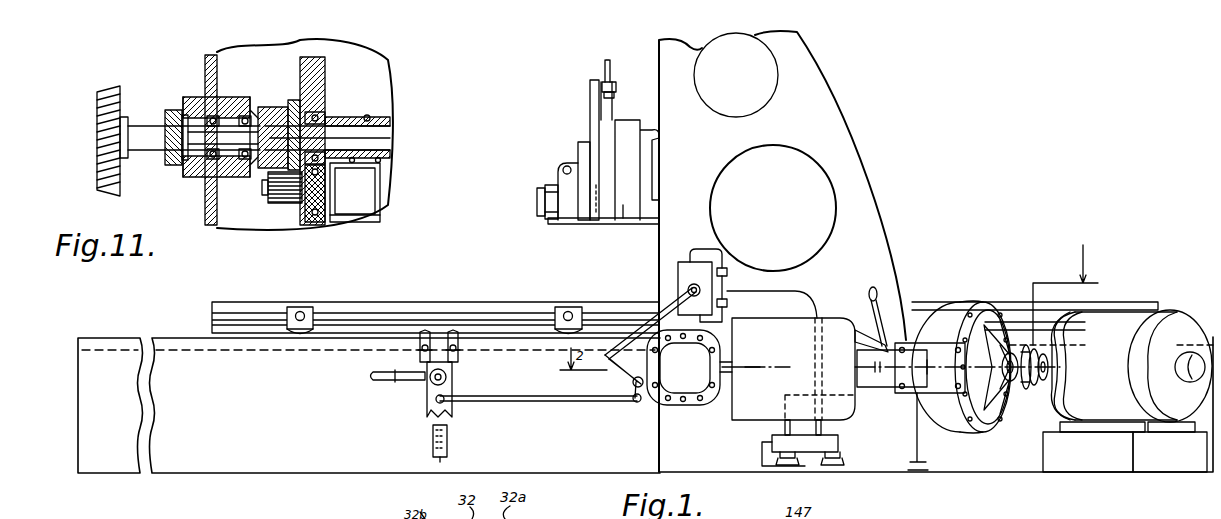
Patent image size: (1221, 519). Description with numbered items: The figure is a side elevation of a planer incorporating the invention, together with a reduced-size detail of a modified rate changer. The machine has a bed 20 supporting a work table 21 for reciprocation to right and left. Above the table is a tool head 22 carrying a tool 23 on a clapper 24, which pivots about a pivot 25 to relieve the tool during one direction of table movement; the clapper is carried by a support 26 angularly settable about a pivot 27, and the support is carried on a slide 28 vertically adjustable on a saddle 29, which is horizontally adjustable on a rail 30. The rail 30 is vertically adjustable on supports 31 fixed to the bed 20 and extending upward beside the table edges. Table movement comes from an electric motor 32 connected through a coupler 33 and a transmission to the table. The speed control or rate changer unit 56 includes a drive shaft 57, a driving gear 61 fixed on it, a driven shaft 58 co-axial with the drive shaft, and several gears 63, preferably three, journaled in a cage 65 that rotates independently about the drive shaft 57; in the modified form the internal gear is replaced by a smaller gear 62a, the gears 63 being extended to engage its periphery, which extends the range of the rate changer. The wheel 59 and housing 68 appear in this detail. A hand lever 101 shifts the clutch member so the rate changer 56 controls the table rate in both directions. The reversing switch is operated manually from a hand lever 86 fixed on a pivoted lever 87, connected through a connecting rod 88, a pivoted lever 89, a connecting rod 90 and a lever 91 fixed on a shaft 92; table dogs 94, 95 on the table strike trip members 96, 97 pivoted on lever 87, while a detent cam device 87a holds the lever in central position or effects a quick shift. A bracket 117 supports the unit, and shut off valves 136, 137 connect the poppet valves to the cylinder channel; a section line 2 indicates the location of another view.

In FIG. 1, the bed 20 is at (283, 462).
In FIG. 1, the work table 21 is at (262, 302).
In FIG. 1, the tool head 22 is at (568, 160).
In FIG. 1, the tool 23 is at (548, 222).
In FIG. 1, the clapper 24 is at (570, 225).
In FIG. 1, the pivot 25 is at (560, 170).
In FIG. 1, the support 26 is at (582, 152).
In FIG. 1, the pivot 27 is at (596, 225).
In FIG. 1, the slide 28 is at (589, 112).
In FIG. 1, the saddle 29 is at (620, 128).
In FIG. 1, the rail 30 is at (647, 222).
In FIG. 1, the support 31 is at (862, 175).
In FIG. 1, the electric motor 32 is at (1170, 324).
In FIG. 1, the coupler 33 is at (1034, 385).
In FIG. 1, the rate changer unit 56 is at (896, 369).
In FIG. 11, the drive shaft 57 is at (385, 139).
In FIG. 11, the driven shaft 58 is at (200, 160).
In FIG. 11, the grinding wheel 59 is at (106, 98).
In FIG. 11, the driving gear 61 is at (294, 100).
In FIG. 11, the gear 62a is at (278, 105).
In FIG. 11, the gear 63 is at (286, 204).
In FIG. 11, the cage 65 is at (325, 96).
In FIG. 11, the housing 68 is at (366, 198).
In FIG. 1, the hand lever 86 is at (378, 381).
In FIG. 1, the pivoted lever 87 is at (430, 392).
In FIG. 1, the detent cam device 87a is at (433, 437).
In FIG. 1, the connecting rod 88 is at (570, 402).
In FIG. 1, the pivoted lever 89 is at (632, 380).
In FIG. 1, the connecting rod 90 is at (668, 302).
In FIG. 1, the lever 91 is at (690, 268).
In FIG. 1, the shaft 92 is at (693, 297).
In FIG. 1, the table dog 94 is at (302, 306).
In FIG. 1, the table dog 95 is at (570, 306).
In FIG. 1, the trip member 96 is at (462, 337).
In FIG. 1, the trip member 97 is at (418, 340).
In FIG. 1, the hand lever 101 is at (870, 292).
In FIG. 1, the bracket 117 is at (803, 443).
In FIG. 1, the shut off valve 136 is at (728, 303).
In FIG. 1, the shut off valve 137 is at (727, 262).
In FIG. 1, the section line 2 is at (1065, 295).